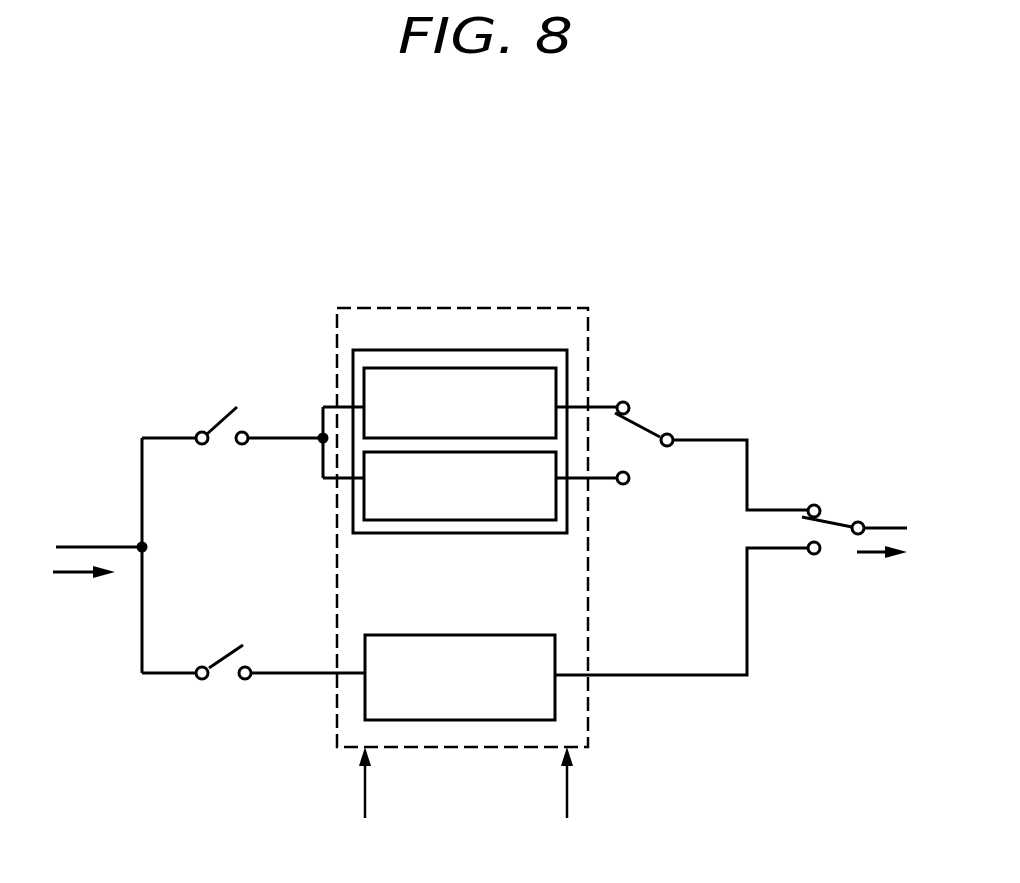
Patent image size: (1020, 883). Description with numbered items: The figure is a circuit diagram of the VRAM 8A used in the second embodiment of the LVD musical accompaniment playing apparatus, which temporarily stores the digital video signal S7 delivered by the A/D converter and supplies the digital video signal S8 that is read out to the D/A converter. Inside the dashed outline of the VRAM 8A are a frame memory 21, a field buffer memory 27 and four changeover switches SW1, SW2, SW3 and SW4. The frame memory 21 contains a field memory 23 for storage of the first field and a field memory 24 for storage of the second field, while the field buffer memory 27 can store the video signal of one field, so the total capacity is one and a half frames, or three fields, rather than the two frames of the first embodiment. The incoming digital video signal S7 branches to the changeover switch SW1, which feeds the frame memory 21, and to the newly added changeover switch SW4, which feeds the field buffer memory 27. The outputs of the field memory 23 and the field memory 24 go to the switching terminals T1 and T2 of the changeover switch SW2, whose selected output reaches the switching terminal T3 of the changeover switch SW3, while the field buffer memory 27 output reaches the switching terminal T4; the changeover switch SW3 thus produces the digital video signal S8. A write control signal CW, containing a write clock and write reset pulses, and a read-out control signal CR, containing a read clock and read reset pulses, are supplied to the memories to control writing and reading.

The VRAM 8A is at (333, 203).
The frame memory 21 is at (427, 350).
The field memory 23 is at (493, 368).
The field memory 24 is at (520, 520).
The field buffer memory 27 is at (467, 722).
The changeover switch SW1 is at (228, 405).
The changeover switch SW2 is at (658, 423).
The changeover switch SW3 is at (838, 507).
The changeover switch SW4 is at (225, 677).
The switching terminal T1 is at (623, 402).
The switching terminal T2 is at (623, 484).
The switching terminal T3 is at (812, 507).
The switching terminal T4 is at (814, 554).
The digital video signal S7 is at (73, 578).
The digital video signal S8 is at (877, 558).
The write control signal CW is at (369, 802).
The read-out control signal CR is at (568, 803).